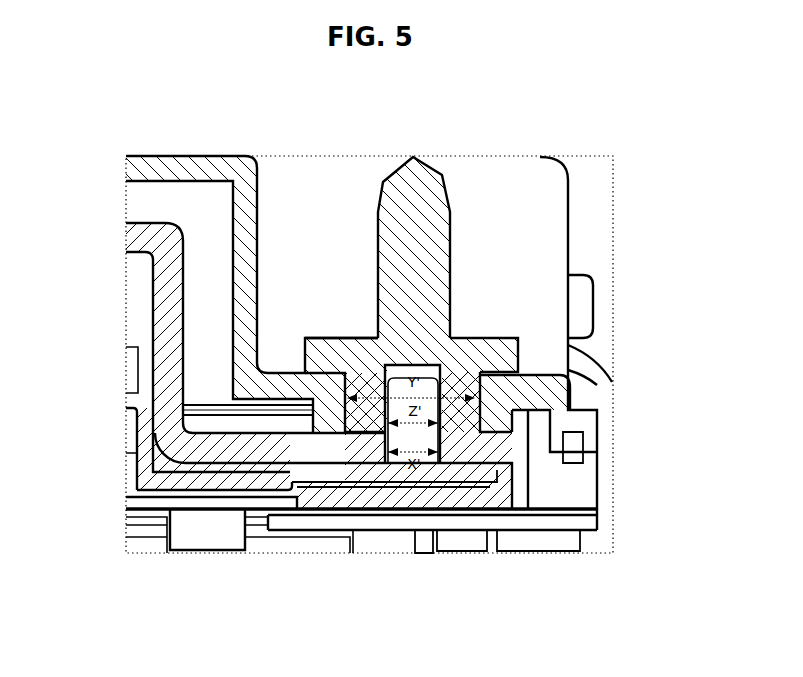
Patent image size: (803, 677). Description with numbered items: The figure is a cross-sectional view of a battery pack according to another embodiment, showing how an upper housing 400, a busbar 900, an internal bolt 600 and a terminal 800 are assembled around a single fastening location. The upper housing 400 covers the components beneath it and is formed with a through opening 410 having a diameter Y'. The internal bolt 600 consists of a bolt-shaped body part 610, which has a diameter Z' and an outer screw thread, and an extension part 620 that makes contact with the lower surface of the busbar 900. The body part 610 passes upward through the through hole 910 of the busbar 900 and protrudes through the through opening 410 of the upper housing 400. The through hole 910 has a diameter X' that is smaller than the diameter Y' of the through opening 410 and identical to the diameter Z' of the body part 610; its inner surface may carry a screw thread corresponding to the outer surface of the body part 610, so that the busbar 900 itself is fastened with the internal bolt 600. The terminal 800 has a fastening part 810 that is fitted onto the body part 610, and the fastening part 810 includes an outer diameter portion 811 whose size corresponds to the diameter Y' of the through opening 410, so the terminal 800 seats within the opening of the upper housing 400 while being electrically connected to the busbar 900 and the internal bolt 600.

The terminal 800 is at (381, 174).
The through opening 410 is at (340, 338).
The through hole 910 is at (480, 338).
The upper housing 400 is at (263, 383).
The busbar 900 is at (155, 432).
The outer diameter portion 811 is at (612, 372).
The fastening part 810 is at (612, 427).
The body part 610 is at (382, 478).
The extension part 620 is at (470, 470).
The internal bolt 600 is at (367, 628).